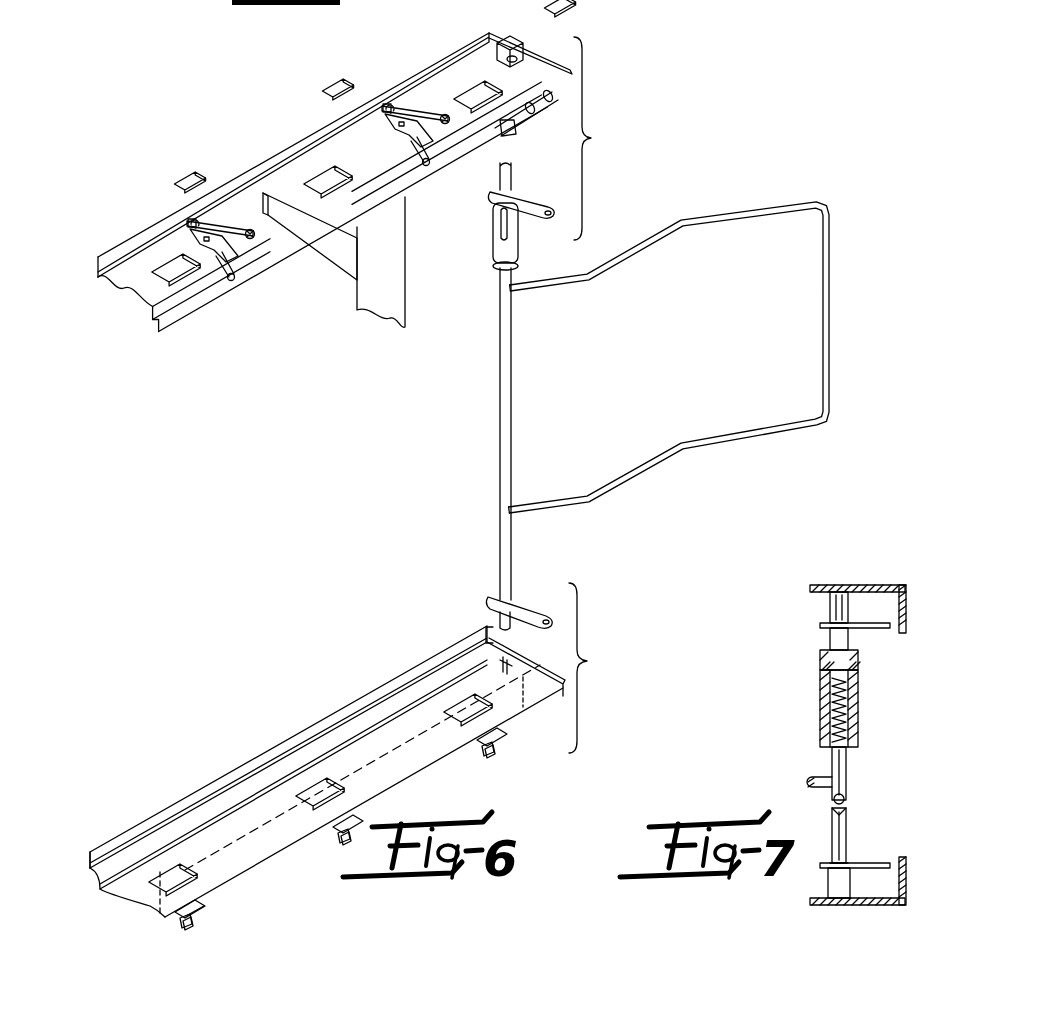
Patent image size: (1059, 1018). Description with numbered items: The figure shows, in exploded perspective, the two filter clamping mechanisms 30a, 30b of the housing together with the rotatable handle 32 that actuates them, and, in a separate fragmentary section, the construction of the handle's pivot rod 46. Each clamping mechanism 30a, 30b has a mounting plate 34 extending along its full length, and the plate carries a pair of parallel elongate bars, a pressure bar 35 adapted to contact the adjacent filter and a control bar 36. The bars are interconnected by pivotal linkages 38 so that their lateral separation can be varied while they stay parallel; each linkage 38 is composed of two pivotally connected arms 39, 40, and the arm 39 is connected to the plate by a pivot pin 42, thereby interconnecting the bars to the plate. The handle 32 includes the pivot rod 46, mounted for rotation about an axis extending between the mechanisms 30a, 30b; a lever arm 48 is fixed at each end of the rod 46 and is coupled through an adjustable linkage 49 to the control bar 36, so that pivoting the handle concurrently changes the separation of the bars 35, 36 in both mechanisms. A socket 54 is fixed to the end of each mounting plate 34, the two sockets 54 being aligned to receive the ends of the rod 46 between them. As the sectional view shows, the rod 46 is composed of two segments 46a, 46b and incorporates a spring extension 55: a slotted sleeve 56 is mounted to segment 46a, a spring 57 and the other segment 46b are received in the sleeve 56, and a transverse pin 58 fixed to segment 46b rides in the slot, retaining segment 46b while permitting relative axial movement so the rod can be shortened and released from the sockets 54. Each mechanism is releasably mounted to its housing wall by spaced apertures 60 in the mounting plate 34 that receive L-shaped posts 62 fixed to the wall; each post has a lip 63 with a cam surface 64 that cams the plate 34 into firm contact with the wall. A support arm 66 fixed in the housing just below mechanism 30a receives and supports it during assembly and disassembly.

In FIG. 6, the filter clamping mechanism 30a is at (128, 320).
In FIG. 6, the filter clamping mechanism 30b is at (92, 838).
In FIG. 6, the rotatable handle 32 is at (760, 212).
In FIG. 7, the rotatable handle 32 is at (806, 780).
In FIG. 6, the mounting plate 34 is at (318, 150).
In FIG. 6, the pressure bar 35 is at (122, 250).
In FIG. 6, the control bar 36 is at (170, 322).
In FIG. 6, the pivotal linkage 38 is at (372, 123).
In FIG. 6, the arm 39 is at (222, 262).
In FIG. 6, the arm 40 is at (222, 222).
In FIG. 6, the pivot pin 42 is at (190, 222).
In FIG. 6, the pivot rod 46 is at (500, 456).
In FIG. 7, the pivot rod 46 is at (820, 730).
In FIG. 7, the rod segment 46a is at (832, 848).
In FIG. 7, the rod segment 46b is at (830, 637).
In FIG. 6, the lever arm 48 is at (522, 195).
In FIG. 7, the lever arm 48 is at (890, 628).
In FIG. 6, the adjustable linkage 49 is at (535, 85).
In FIG. 6, the socket 54 is at (490, 62).
In FIG. 7, the socket 54 is at (820, 597).
In FIG. 6, the spring extension 55 is at (492, 262).
In FIG. 7, the spring extension 55 is at (820, 713).
In FIG. 6, the slotted sleeve 56 is at (519, 256).
In FIG. 7, the slotted sleeve 56 is at (858, 720).
In FIG. 7, the spring 57 is at (850, 690).
In FIG. 6, the transverse pin 58 is at (495, 220).
In FIG. 7, the transverse pin 58 is at (820, 665).
In FIG. 6, the aperture 60 is at (165, 285).
In FIG. 6, the post 62 is at (188, 175).
In FIG. 6, the lip 63 is at (200, 175).
In FIG. 6, the cam surface 64 is at (203, 912).
In FIG. 6, the support arm 66 is at (335, 268).